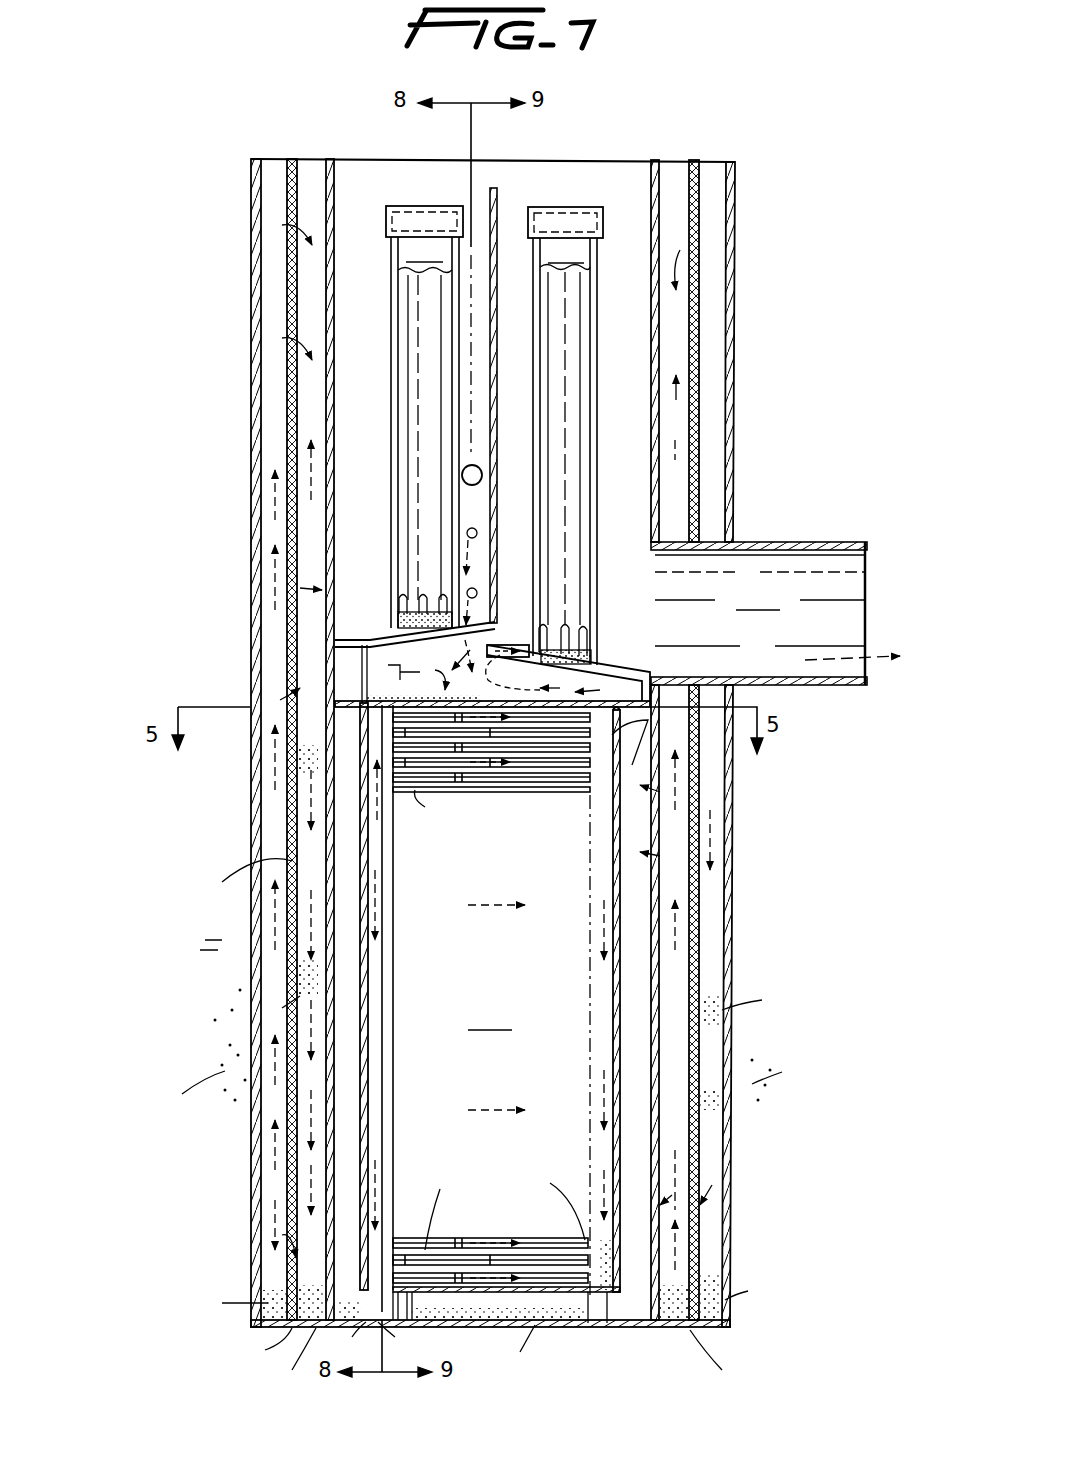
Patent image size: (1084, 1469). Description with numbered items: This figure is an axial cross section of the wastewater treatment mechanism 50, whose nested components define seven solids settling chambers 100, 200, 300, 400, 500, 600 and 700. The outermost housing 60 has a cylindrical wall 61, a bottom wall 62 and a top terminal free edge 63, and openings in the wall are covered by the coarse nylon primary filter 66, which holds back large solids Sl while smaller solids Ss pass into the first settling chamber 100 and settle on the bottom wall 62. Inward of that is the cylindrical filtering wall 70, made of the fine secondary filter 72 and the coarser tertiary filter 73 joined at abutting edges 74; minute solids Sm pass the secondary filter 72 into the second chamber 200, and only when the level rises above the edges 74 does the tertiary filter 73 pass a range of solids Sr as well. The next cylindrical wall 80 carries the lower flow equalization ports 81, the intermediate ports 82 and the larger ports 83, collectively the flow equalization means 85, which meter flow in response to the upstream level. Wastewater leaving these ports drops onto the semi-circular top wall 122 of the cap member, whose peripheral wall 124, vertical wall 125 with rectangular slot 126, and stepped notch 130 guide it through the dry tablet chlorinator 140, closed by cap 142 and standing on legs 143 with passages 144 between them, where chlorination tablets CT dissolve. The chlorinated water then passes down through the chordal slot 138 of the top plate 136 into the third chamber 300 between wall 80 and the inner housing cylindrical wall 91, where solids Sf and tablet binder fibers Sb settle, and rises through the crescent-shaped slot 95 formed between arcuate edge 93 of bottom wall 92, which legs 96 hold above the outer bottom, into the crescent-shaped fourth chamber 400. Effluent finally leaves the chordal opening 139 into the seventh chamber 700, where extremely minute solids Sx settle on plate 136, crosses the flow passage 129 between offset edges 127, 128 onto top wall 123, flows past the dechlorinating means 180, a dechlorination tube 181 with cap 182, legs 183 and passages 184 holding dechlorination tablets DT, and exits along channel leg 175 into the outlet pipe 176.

The wastewater treatment mechanism 50 is at (730, 136).
The outermost housing 60 is at (740, 193).
The cylindrical wall 61 is at (255, 587).
The bottom wall 62 is at (657, 1328).
The top terminal free edge 63 is at (257, 158).
The primary filter 66 is at (252, 961).
The cylindrical filtering wall 70 is at (285, 672).
The secondary filter 72 is at (292, 536).
The tertiary filter 73 is at (290, 259).
The abutting edges 74 is at (292, 479).
The cylindrical wall 80 is at (338, 211).
The lower flow equalization ports 81 is at (497, 592).
The flow equalization ports 82 is at (468, 529).
The larger flow equalization ports 83 is at (466, 468).
The flow equalization means 85 is at (497, 465).
The cylindrical wall 91 is at (384, 1028).
The bottom wall 92 is at (465, 1285).
The arcuate edge 93 is at (393, 1250).
The crescent-shaped slot 95 is at (408, 1306).
The legs 96 is at (428, 1255).
The first solids settling chamber 100 is at (272, 1167).
The semi-circular top wall 122 is at (382, 634).
The semi-circular top wall 123 is at (636, 660).
The peripheral wall 124 is at (388, 673).
The vertical wall 125 is at (498, 210).
The rectangular slot 126 is at (486, 214).
The edge 127 is at (478, 618).
The edge 128 is at (543, 676).
The flow passage 129 is at (545, 625).
The stepped notch 130 is at (345, 659).
The top plate 136 is at (491, 752).
The chordal slot 138 is at (370, 712).
The chordal opening 139 is at (622, 711).
The dry tablet chlorinator 140 is at (424, 417).
The cap 142 is at (424, 220).
The legs 143 is at (404, 582).
The passages 144 is at (400, 602).
The channel leg 175 is at (652, 671).
The outlet pipe 176 is at (775, 613).
The dechlorinating means 180 is at (597, 372).
The dechlorination tube 181 is at (565, 436).
The cap 182 is at (558, 214).
The legs 183 is at (592, 652).
The passages 184 is at (588, 628).
The second solids settling chamber 200 is at (308, 1118).
The third solids settling chamber 300 is at (352, 914).
The fourth settling chamber 400 is at (382, 961).
The fifth solids settling chamber 500 is at (495, 795).
The sixth solids settling chamber 600 is at (608, 1119).
The seventh solids settling chamber 700 is at (443, 646).
The chlorination tablets CT is at (422, 596).
The dechlorination tablets DT is at (588, 637).
The minute solids Sm is at (483, 821).
The range of solids Sr is at (477, 884).
The smaller solids Ss is at (492, 1150).
The large solids Sl is at (481, 1086).
The binder fibers Sb is at (481, 1082).
The solids settled in the third settling chamber Sf is at (353, 1341).
The extremely minute solids Sx is at (422, 680).